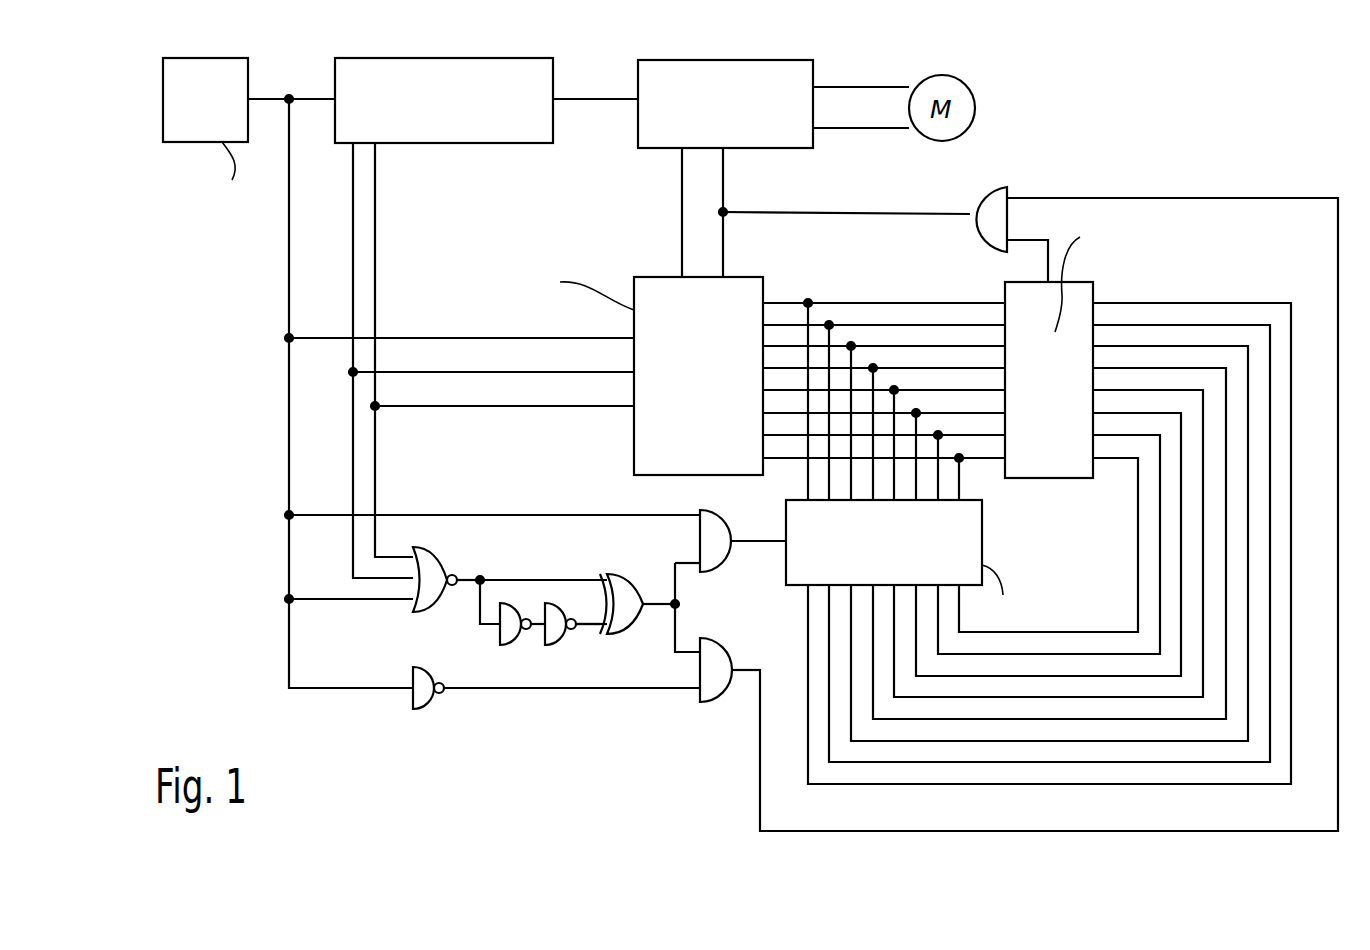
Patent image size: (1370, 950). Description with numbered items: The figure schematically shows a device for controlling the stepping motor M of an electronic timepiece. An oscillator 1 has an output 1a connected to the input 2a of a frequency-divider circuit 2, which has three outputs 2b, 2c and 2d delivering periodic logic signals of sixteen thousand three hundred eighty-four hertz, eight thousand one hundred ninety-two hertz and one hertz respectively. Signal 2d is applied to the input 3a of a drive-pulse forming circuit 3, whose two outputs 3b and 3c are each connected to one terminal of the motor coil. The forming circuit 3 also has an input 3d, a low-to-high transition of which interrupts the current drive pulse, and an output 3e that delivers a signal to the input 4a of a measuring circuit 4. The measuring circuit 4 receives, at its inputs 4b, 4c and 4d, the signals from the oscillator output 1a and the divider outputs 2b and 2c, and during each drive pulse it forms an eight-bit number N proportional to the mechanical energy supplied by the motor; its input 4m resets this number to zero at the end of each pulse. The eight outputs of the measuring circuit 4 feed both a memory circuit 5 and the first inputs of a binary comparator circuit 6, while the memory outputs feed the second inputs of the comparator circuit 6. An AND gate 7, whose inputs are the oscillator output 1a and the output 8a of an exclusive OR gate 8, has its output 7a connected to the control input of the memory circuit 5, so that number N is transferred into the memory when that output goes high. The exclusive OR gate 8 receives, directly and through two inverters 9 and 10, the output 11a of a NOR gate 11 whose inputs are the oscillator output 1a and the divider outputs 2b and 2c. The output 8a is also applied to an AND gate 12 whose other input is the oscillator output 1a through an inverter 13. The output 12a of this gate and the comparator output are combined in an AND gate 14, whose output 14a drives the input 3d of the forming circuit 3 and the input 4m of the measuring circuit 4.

The oscillator 1 is at (195, 72).
The output of oscillator 1a is at (253, 93).
The frequency-divider circuit 2 is at (452, 83).
The input of frequency-divider circuit 2a is at (333, 98).
The output of divider circuit 2b is at (352, 148).
The output of divider circuit 2c is at (378, 148).
The output of divider circuit 2d is at (555, 100).
The drive-pulse forming circuit 3 is at (750, 85).
The input of drive-pulse forming circuit 3a is at (638, 98).
The output of forming circuit 3b is at (817, 83).
The output of forming circuit 3c is at (815, 130).
The input of forming circuit 3d is at (727, 150).
The output of forming circuit 3e is at (677, 150).
The measuring circuit 4 is at (660, 303).
The input of measuring circuit 4a is at (677, 273).
The input of measuring circuit 4m is at (727, 273).
The input of measuring circuit 4b is at (632, 337).
The input of measuring circuit 4c is at (627, 373).
The input of measuring circuit 4d is at (630, 407).
The memory circuit 5 is at (970, 549).
The binary comparator circuit 6 is at (1048, 478).
The AND gate 7 is at (708, 541).
The output of AND gate 7a is at (730, 537).
The exclusive OR gate 8 is at (617, 628).
The output of exclusive OR gate 8a is at (648, 616).
The inverter 9 is at (509, 646).
The inverter 10 is at (555, 647).
The NOR gate 11 is at (427, 600).
The output of NOR gate 11a is at (460, 587).
The AND gate 12 is at (708, 685).
The output of AND gate 12a is at (728, 676).
The inverter 13 is at (423, 705).
The AND gate 14 is at (985, 215).
The output of AND gate 14a is at (967, 213).